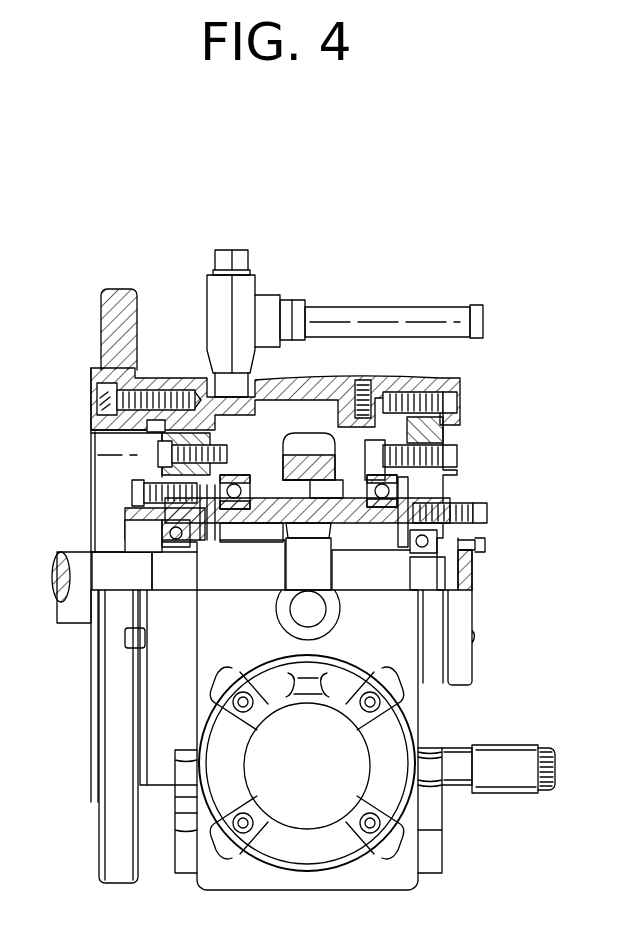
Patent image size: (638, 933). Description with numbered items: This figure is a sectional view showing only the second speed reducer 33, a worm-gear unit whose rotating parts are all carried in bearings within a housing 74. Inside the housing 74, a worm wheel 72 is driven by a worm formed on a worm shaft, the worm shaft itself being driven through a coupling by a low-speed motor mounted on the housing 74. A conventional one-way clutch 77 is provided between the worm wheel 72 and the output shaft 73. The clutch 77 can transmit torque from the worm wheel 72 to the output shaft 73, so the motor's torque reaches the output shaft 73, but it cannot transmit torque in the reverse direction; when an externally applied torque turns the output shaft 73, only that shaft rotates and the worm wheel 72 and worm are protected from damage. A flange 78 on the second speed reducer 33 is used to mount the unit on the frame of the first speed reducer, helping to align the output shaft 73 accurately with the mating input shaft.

The second speed reducer 33 is at (181, 372).
The worm wheel 72 is at (274, 447).
The output shaft 73 is at (67, 552).
The housing 74 is at (409, 378).
The one-way clutch 77 is at (310, 538).
The flange 78 is at (118, 287).